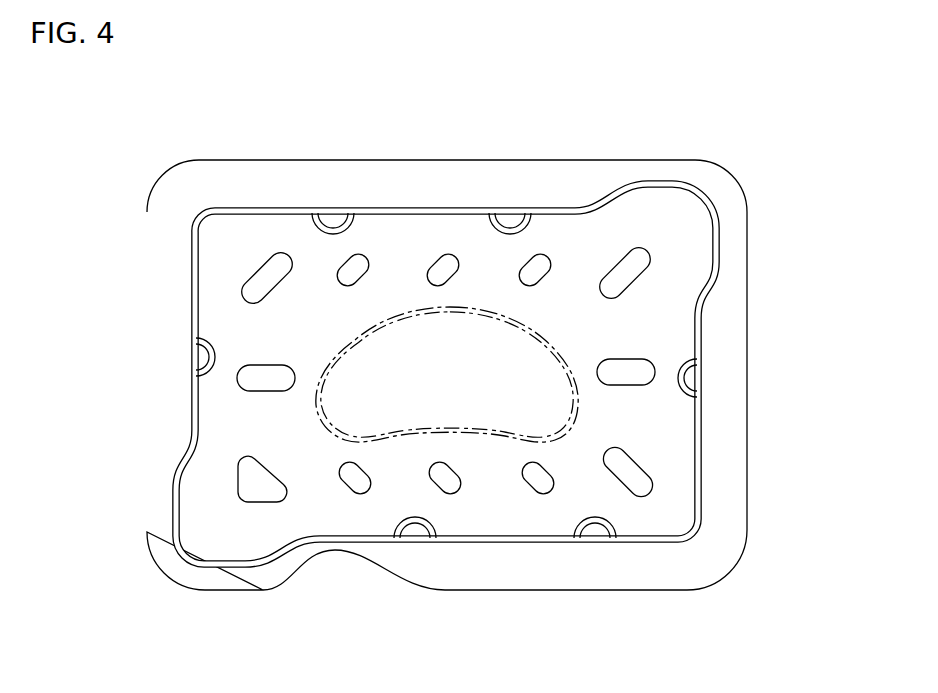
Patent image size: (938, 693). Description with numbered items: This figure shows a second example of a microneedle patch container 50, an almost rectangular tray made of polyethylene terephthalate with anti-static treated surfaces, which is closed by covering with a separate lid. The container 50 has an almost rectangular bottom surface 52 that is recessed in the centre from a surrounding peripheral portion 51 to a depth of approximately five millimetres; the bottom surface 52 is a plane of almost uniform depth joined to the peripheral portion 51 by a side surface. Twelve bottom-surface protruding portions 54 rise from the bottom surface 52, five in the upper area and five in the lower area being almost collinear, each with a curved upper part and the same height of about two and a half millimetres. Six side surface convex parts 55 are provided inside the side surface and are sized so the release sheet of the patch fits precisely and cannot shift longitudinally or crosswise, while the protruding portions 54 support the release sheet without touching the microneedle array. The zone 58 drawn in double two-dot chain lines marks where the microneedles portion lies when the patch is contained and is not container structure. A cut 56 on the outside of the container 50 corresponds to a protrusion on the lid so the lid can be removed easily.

The microneedle patch container 50 is at (162, 180).
The peripheral portion 51 is at (748, 355).
The bottom surface 52 is at (703, 238).
The bottom-surface protruding portions 54 is at (640, 473).
The side surface convex parts 55 is at (594, 534).
The cut 56 is at (364, 553).
The zone 58 is at (466, 389).